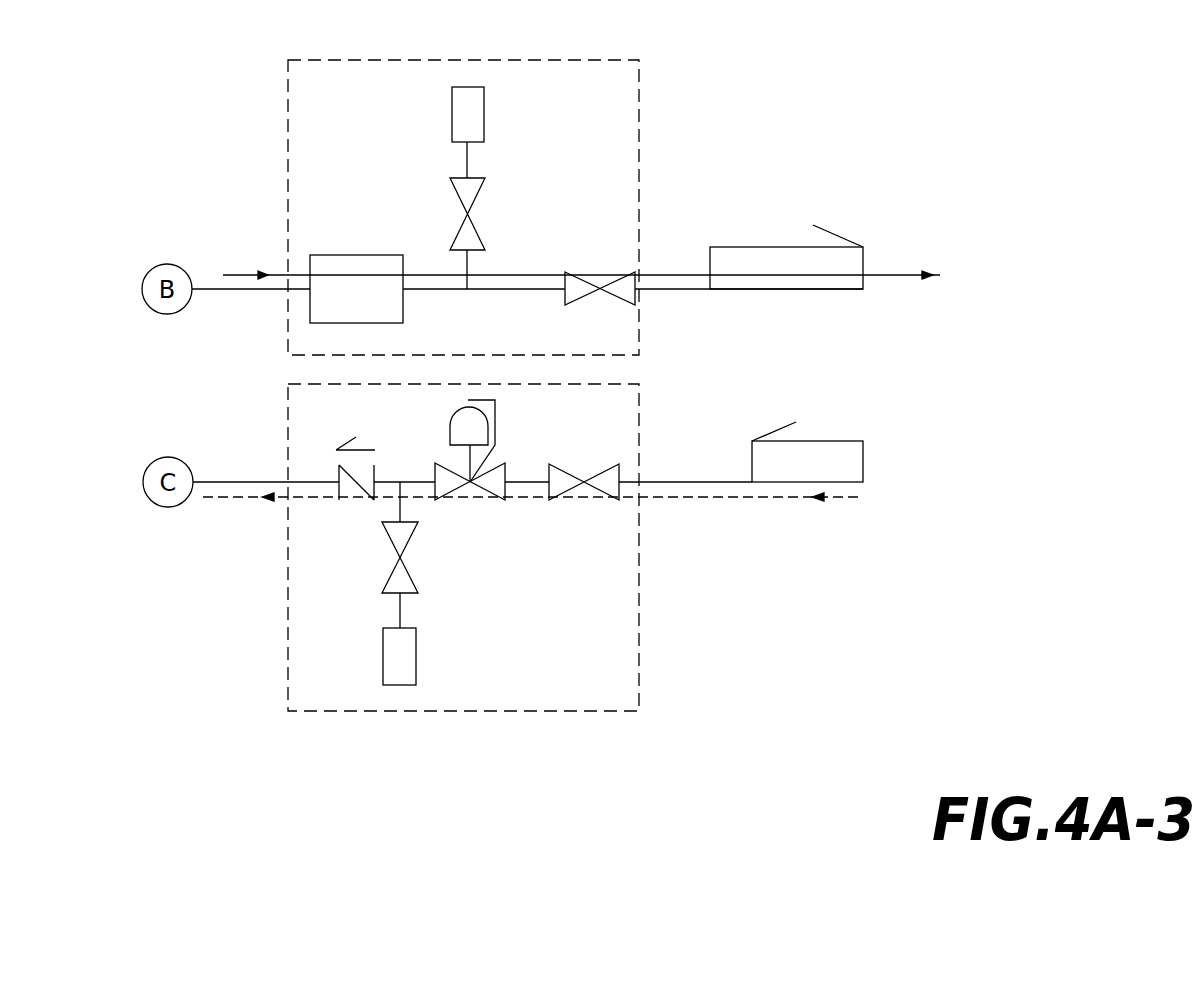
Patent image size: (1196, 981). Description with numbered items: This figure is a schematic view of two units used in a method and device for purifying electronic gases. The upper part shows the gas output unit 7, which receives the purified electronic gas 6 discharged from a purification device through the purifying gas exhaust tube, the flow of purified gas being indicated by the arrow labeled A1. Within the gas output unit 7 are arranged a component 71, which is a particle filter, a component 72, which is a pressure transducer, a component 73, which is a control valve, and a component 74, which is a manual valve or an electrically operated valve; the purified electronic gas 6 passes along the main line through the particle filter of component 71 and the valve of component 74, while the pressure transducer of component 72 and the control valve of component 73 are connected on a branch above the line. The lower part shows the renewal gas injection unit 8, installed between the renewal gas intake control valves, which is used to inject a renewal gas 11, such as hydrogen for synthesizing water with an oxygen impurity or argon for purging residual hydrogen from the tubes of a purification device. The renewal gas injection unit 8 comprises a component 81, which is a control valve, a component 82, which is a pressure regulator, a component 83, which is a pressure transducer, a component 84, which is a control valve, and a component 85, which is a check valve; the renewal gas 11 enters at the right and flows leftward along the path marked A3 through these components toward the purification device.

The gas output unit 7 is at (640, 97).
The component 71 is at (356, 255).
The component 72 is at (484, 107).
The component 73 is at (475, 228).
The component 74 is at (638, 295).
The purified electronic gas 6 is at (788, 247).
The flow path A1 is at (895, 275).
The renewal gas injection unit 8 is at (528, 713).
The component 81 is at (571, 489).
The component 82 is at (457, 488).
The component 83 is at (383, 653).
The component 84 is at (392, 572).
The component 85 is at (339, 465).
The renewal gas 11 is at (829, 441).
The flow path A3 is at (782, 498).